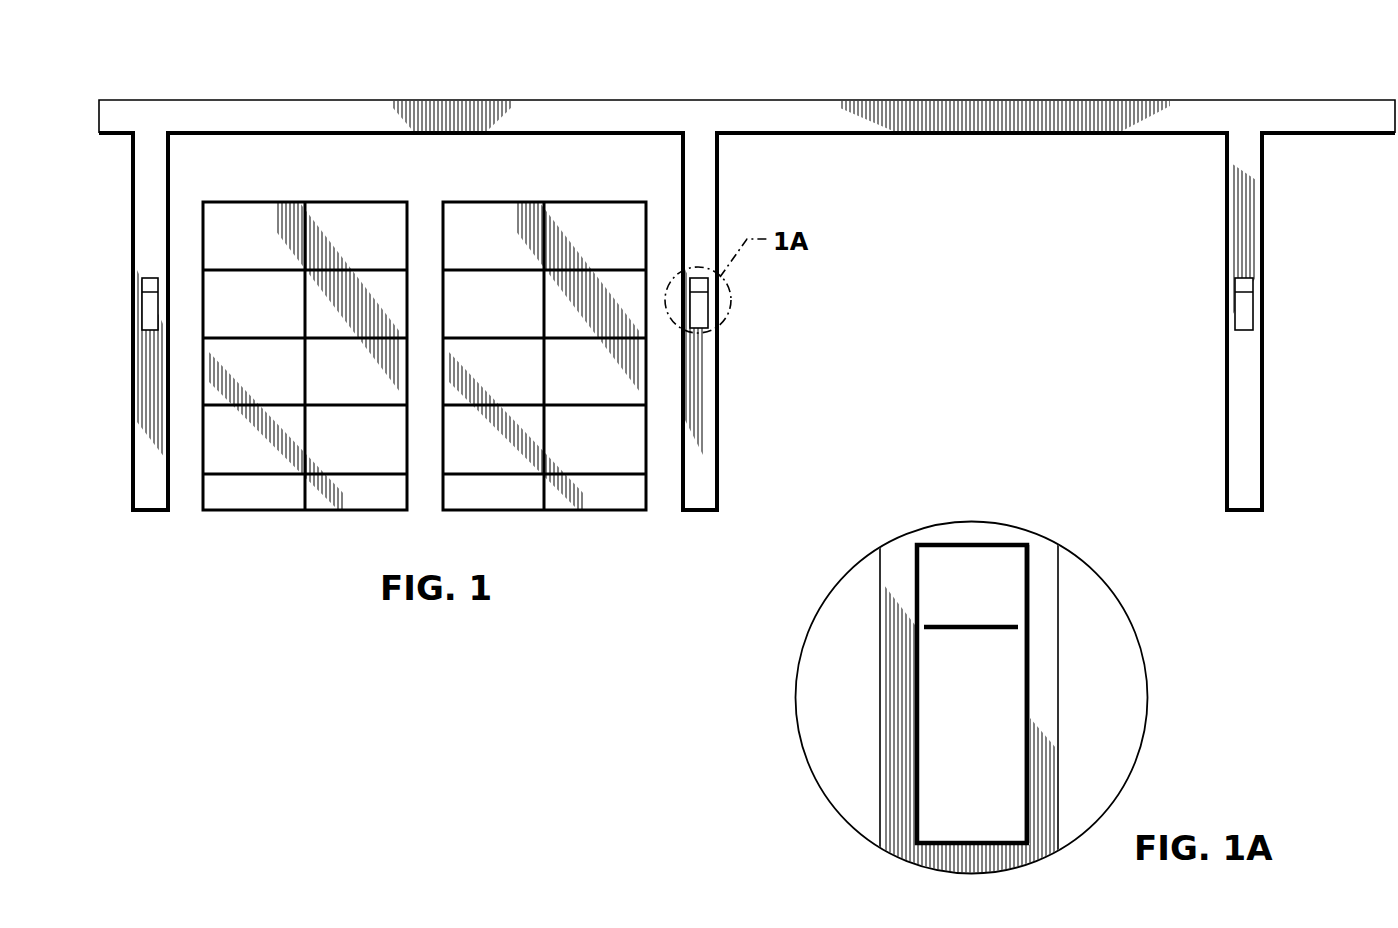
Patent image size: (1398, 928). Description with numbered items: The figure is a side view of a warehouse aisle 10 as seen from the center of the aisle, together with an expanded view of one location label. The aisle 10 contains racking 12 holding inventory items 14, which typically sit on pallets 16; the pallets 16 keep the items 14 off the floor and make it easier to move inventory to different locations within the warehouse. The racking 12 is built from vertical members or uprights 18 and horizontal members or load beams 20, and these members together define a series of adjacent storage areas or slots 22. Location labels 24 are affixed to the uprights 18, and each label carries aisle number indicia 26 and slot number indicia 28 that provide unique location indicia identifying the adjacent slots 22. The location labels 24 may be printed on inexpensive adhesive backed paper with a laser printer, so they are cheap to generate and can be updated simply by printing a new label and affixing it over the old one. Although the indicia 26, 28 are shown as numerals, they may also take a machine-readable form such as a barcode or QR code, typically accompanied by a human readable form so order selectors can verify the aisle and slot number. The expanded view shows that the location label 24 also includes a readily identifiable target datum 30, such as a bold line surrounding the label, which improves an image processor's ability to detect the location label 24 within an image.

In FIG. 1, the aisle 10 is at (121, 58).
In FIG. 1, the racking 12 is at (207, 99).
In FIG. 1, the inventory items 14 is at (424, 356).
In FIG. 1, the pallets 16 is at (424, 377).
In FIG. 1, the uprights 18 is at (168, 176).
In FIG. 1, the load beams 20 is at (1160, 112).
In FIG. 1, the slots 22 is at (721, 169).
In FIG. 1, the location labels 24 is at (142, 288).
In FIG. 1A, the location labels 24 is at (973, 694).
In FIG. 1A, the aisle number indicia 26 is at (958, 582).
In FIG. 1A, the slot number indicia 28 is at (966, 740).
In FIG. 1A, the target datum 30 is at (1028, 713).